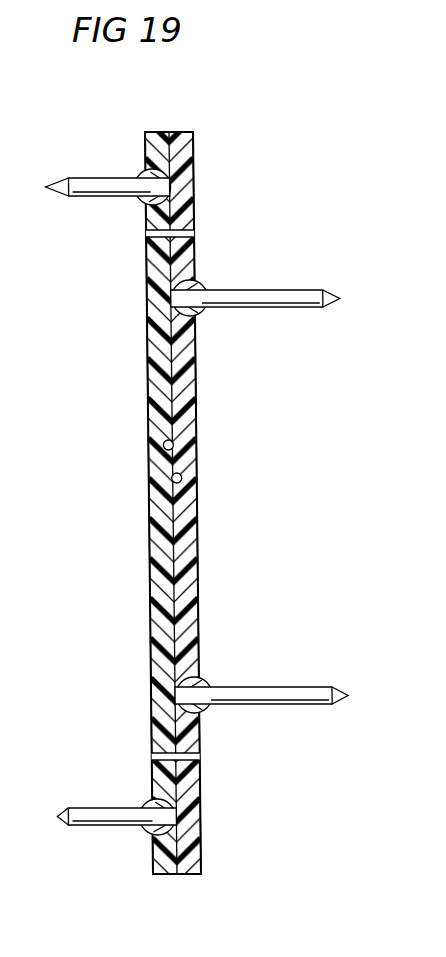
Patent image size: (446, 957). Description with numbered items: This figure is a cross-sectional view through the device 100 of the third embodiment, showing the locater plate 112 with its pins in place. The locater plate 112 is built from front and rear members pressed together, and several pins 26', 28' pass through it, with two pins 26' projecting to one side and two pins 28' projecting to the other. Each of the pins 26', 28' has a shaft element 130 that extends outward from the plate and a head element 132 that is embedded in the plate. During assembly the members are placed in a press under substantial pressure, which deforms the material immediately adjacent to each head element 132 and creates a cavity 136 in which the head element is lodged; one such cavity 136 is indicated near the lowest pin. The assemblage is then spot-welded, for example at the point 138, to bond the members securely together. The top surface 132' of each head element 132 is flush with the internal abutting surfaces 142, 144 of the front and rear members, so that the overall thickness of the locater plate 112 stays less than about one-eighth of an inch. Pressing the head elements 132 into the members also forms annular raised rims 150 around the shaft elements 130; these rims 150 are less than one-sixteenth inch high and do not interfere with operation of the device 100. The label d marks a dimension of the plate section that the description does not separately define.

The device 100 is at (202, 531).
The locater plate 112 is at (148, 389).
The shaft element 130 is at (102, 198).
The head element 132 is at (194, 451).
The top surface of head element 132' is at (175, 410).
The cavity 136 is at (200, 262).
The spot-weld point 138 is at (143, 238).
The internal abutting surface 142 is at (172, 434).
The internal abutting surface 144 is at (165, 490).
The annular raised rim 150 is at (140, 172).
The pin 26' is at (82, 454).
The pin 28' is at (329, 497).
The distance d is at (198, 206).